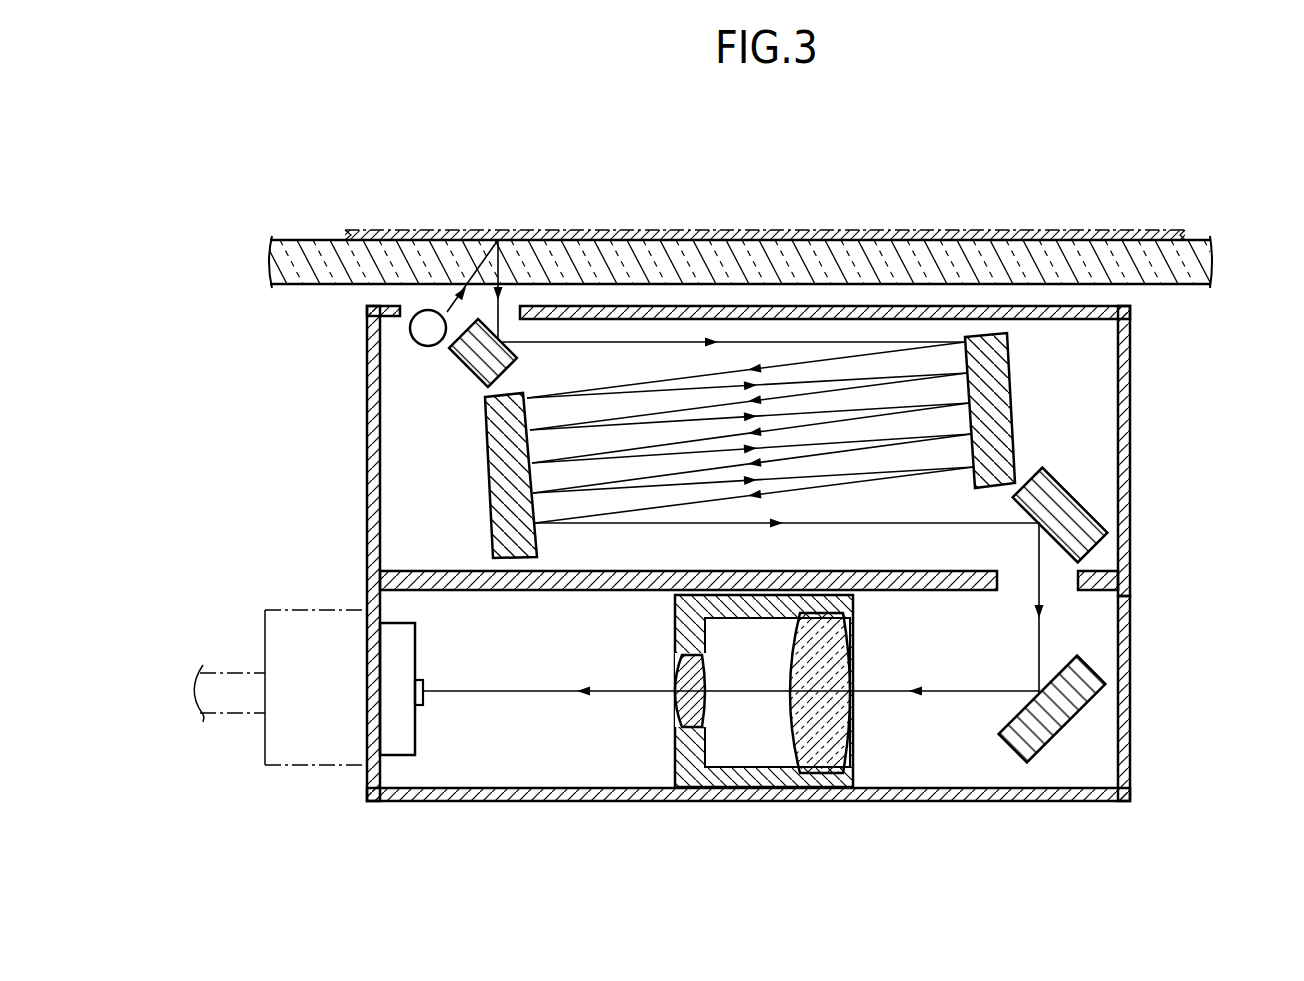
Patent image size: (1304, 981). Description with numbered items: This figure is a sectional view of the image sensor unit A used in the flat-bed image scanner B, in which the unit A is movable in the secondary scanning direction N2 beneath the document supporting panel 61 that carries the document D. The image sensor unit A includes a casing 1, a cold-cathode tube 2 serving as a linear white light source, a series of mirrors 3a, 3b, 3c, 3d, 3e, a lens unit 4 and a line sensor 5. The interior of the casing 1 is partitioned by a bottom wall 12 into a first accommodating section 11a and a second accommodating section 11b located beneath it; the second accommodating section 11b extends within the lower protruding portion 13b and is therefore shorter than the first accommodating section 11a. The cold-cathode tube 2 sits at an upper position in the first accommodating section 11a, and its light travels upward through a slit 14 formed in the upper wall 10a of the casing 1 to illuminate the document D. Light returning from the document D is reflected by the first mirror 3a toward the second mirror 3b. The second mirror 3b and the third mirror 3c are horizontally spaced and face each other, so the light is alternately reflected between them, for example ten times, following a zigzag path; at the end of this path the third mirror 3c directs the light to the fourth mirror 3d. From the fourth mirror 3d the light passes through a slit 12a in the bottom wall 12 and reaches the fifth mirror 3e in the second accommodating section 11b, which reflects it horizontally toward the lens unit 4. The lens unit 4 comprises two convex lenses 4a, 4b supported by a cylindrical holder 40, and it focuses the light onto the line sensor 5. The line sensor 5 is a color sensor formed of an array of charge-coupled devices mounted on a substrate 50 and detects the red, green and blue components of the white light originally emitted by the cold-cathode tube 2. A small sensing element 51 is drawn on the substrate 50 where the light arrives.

The casing 1 is at (793, 515).
The cold-cathode tube 2 is at (423, 328).
The first mirror 3a is at (470, 373).
The second mirror 3b is at (993, 398).
The third mirror 3c is at (500, 470).
The fourth mirror 3d is at (1082, 528).
The fifth mirror 3e is at (1100, 673).
The lens unit 4 is at (760, 738).
The convex lens 4a is at (836, 733).
The convex lens 4b is at (676, 700).
The cylindrical holder 40 is at (789, 780).
The line sensor 5 is at (460, 693).
The substrate 50 is at (403, 740).
The sensor chip 51 is at (421, 683).
The upper wall 10a is at (1085, 306).
The first accommodating section 11a is at (1085, 450).
The second accommodating section 11b is at (980, 772).
The bottom wall 12 is at (660, 567).
The slit 12a is at (1057, 590).
The lower protruding portion 13b is at (557, 800).
The slit 14 is at (512, 302).
The document supporting panel 61 is at (300, 243).
The image sensor unit A is at (281, 372).
The image scanner B is at (393, 158).
The document D is at (590, 230).
The secondary scanning direction N2 is at (1243, 771).